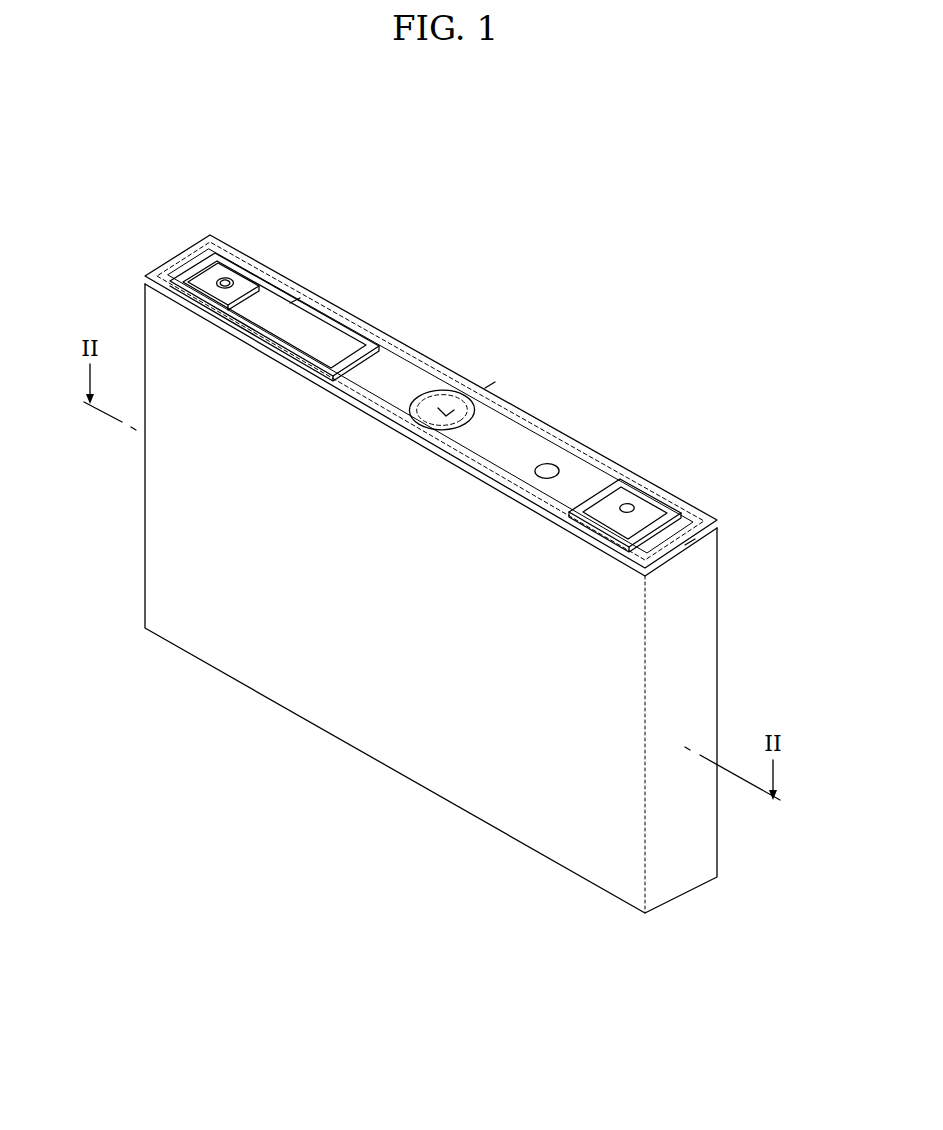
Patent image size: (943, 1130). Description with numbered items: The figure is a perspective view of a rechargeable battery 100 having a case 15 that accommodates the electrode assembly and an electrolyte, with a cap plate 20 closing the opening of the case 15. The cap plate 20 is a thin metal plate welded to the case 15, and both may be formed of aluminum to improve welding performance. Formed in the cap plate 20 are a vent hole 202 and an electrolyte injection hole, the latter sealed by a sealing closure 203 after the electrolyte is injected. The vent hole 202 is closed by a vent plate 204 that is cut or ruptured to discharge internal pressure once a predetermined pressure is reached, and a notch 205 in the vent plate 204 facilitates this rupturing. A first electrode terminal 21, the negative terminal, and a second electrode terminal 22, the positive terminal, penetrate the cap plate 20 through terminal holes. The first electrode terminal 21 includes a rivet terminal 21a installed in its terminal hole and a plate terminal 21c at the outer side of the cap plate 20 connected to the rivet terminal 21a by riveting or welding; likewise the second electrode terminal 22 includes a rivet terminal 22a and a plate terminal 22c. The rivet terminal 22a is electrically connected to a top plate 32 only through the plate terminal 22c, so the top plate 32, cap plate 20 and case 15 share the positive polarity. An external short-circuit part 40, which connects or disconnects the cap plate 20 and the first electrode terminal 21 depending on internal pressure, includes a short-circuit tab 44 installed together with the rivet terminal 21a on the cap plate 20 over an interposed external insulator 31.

The rechargeable battery 100 is at (549, 236).
The case 15 is at (360, 710).
The cap plate 20 is at (405, 375).
The vent hole 202 is at (432, 398).
The vent plate 204 is at (448, 408).
The notch 205 is at (492, 385).
The sealing closure 203 is at (551, 466).
The first electrode terminal 21 is at (236, 262).
The rivet terminal 21a is at (218, 280).
The plate terminal 21c is at (250, 288).
The second electrode terminal 22 is at (634, 482).
The rivet terminal 22a is at (634, 504).
The plate terminal 22c is at (670, 497).
The external insulator 31 is at (297, 300).
The top plate 32 is at (690, 542).
The external short-circuit part 40 is at (328, 292).
The short-circuit tab 44 is at (345, 340).